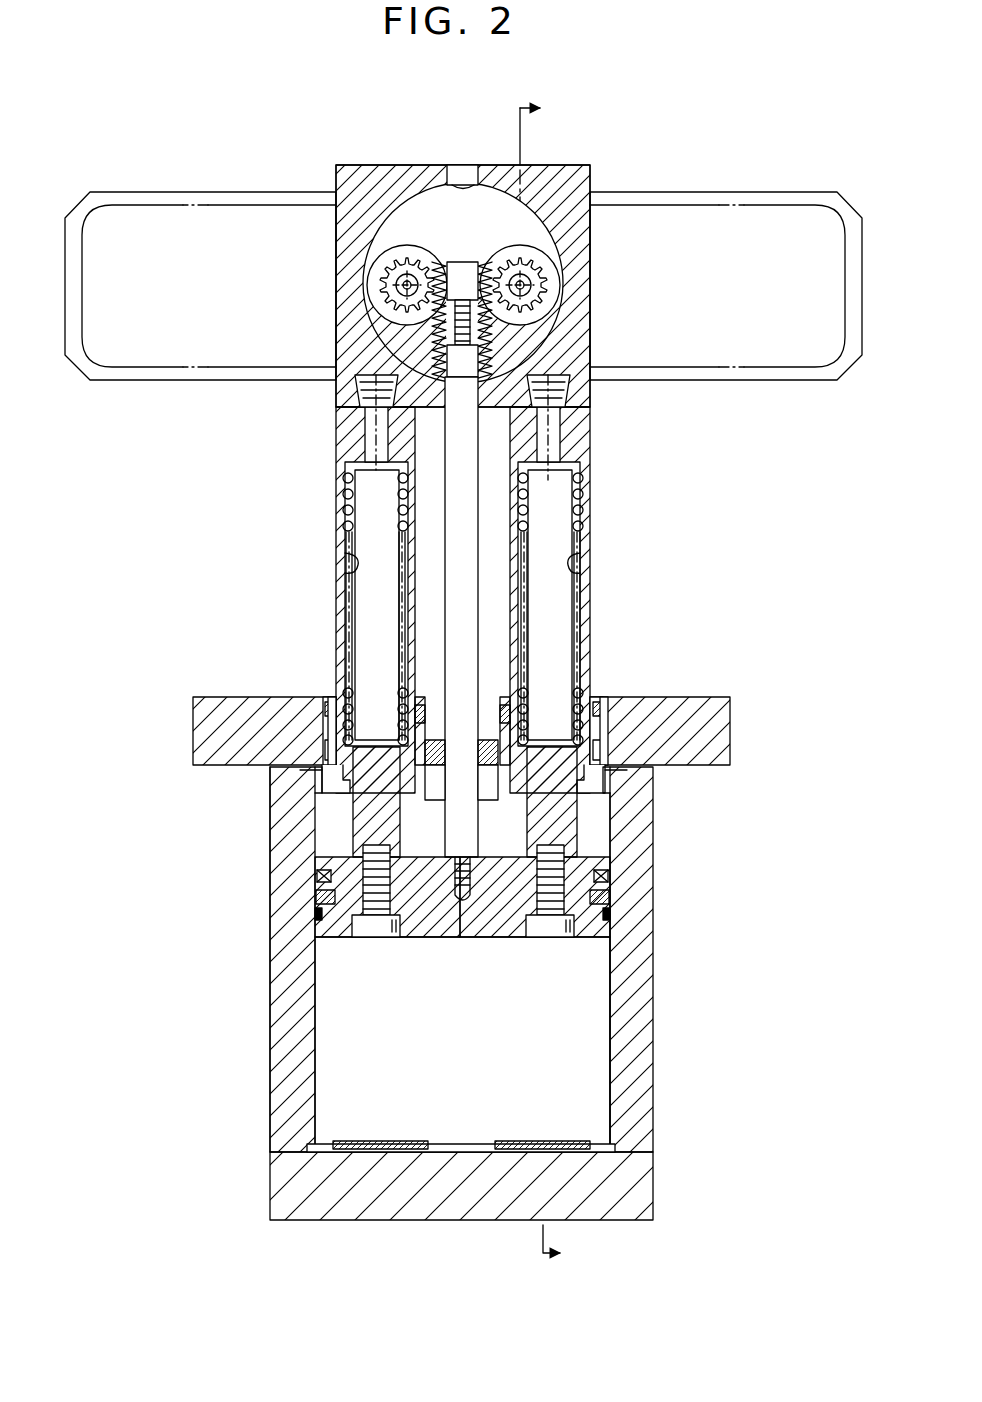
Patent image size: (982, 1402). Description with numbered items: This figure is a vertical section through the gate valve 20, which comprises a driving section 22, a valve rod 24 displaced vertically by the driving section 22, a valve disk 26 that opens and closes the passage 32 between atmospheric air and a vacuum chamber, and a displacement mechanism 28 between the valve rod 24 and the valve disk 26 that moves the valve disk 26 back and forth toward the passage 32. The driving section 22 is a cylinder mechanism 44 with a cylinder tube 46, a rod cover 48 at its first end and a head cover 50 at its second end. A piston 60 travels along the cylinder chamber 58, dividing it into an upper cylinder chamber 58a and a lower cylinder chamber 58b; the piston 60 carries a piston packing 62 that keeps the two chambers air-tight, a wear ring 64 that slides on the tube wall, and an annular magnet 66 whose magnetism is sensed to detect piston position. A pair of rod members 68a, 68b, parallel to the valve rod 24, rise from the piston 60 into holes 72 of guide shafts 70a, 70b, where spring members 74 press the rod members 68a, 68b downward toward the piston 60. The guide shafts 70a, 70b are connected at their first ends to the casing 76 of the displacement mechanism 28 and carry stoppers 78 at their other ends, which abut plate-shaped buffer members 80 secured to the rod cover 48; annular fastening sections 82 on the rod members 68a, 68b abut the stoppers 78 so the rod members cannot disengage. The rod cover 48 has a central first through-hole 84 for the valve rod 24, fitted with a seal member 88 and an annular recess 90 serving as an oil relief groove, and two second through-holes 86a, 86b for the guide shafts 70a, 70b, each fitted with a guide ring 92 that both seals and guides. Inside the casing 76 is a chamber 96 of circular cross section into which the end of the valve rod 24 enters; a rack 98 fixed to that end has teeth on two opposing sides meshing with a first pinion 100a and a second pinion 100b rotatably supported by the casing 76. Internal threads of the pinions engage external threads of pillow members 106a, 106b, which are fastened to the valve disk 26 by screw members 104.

The gate valve 20 is at (727, 86).
The driving section 22 is at (660, 998).
The valve rod 24 is at (468, 560).
The valve disk 26 is at (836, 206).
The displacement mechanism 28 is at (592, 202).
The passage 32 is at (782, 362).
The cylinder mechanism 44 is at (618, 852).
The cylinder tube 46 is at (286, 1018).
The rod cover 48 is at (705, 722).
The head cover 50 is at (632, 1188).
The cylinder chamber 58 is at (473, 1042).
The upper cylinder chamber 58a is at (332, 832).
The lower cylinder chamber 58b is at (582, 1048).
The piston 60 is at (468, 916).
The piston packing 62 is at (610, 876).
The wear ring 64 is at (610, 898).
The annular magnet 66 is at (612, 916).
The rod member 68a is at (365, 815).
The rod member 68b is at (568, 820).
The guide shaft 70a is at (342, 472).
The guide shaft 70b is at (592, 468).
The hole 72 is at (348, 560).
The spring member 74 is at (342, 512).
The casing 76 is at (372, 182).
The stopper 78 is at (310, 772).
The buffer member 80 is at (688, 752).
The annular fastening section 82 is at (604, 700).
The first through-hole 84 is at (510, 706).
The second through-hole 86a is at (326, 700).
The second through-hole 86b is at (604, 700).
The seal member 88 is at (432, 800).
The annular recess 90 is at (428, 706).
The guide ring 92 is at (328, 700).
The chamber 96 is at (430, 196).
The rack 98 is at (562, 336).
The first pinion 100a is at (366, 262).
The second pinion 100b is at (562, 252).
The screw member 104 is at (502, 260).
The pillow member 106a is at (412, 270).
The pillow member 106b is at (552, 288).